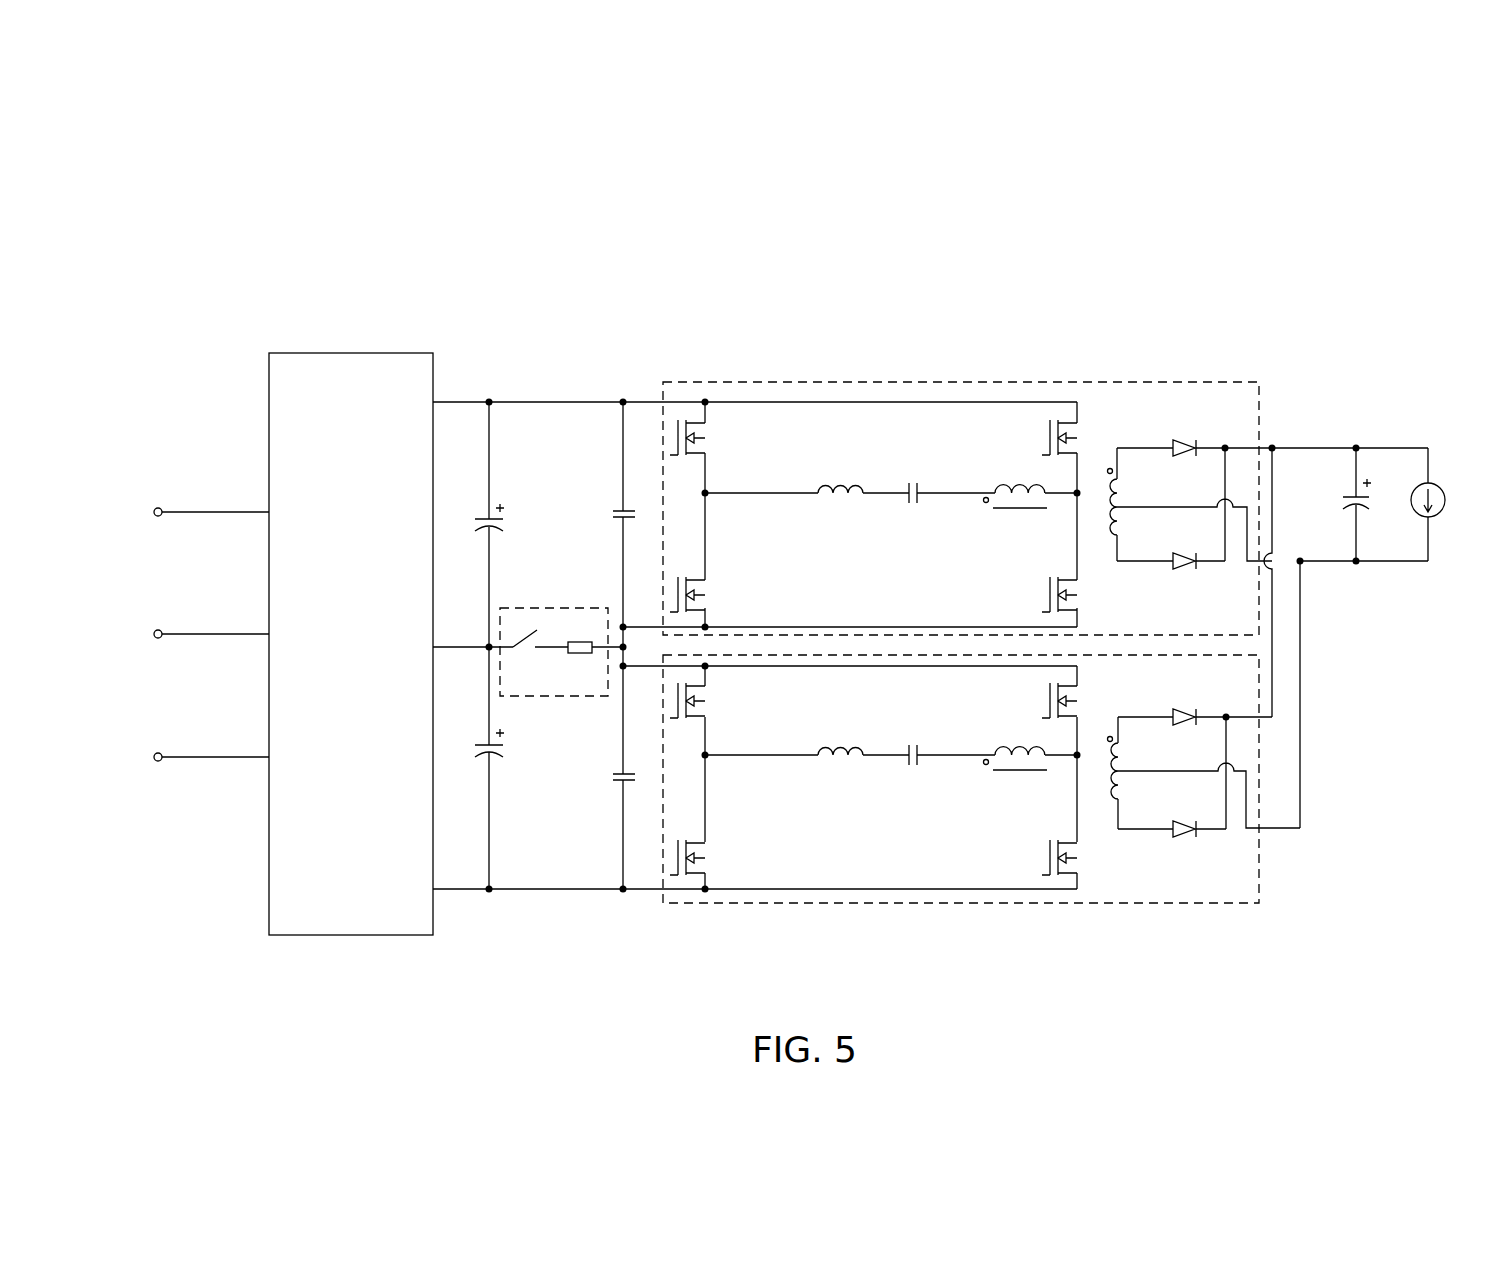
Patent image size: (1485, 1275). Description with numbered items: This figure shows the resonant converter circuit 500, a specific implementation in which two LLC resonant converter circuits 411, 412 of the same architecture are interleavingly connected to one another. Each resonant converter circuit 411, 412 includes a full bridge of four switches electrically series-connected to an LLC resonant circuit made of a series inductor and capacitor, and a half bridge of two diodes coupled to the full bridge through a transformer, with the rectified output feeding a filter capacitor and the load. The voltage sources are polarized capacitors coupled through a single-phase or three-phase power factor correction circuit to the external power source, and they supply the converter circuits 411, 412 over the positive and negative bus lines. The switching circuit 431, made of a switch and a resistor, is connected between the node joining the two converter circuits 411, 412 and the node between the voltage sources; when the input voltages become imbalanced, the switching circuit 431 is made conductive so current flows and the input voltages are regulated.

The resonant converter circuit 500 is at (818, 291).
The switching circuit 431 is at (555, 607).
The first resonant converter circuit 411 is at (967, 380).
The second resonant converter circuit 412 is at (970, 903).